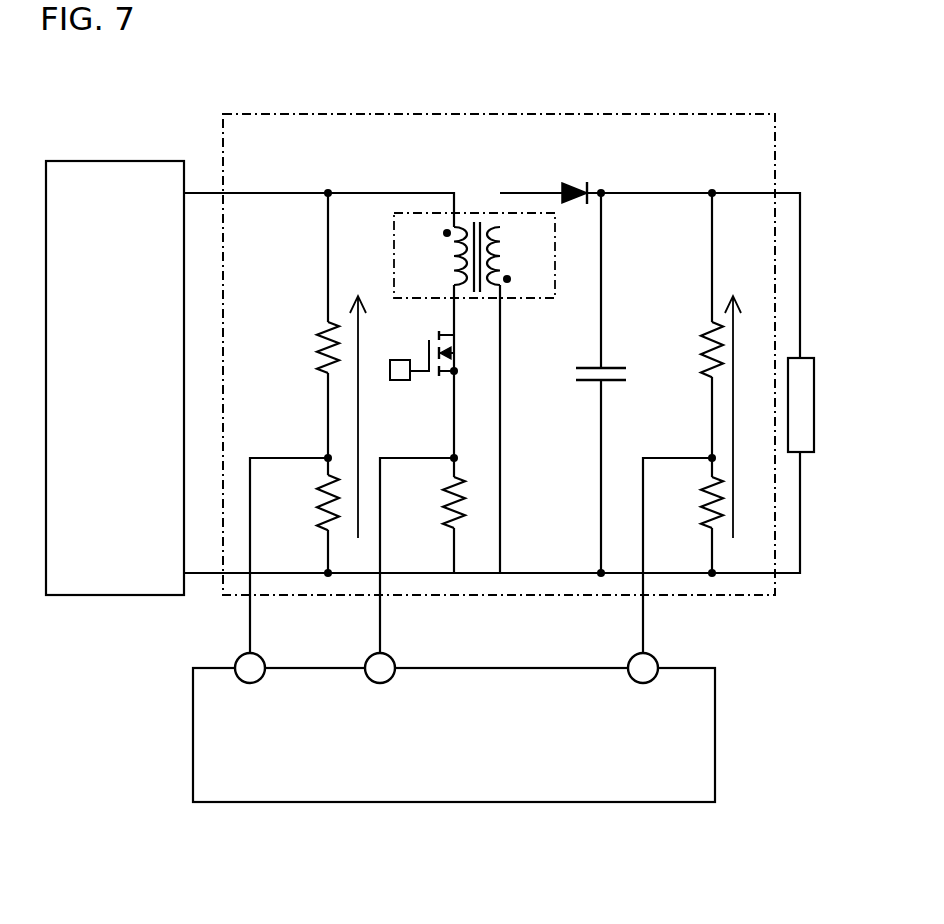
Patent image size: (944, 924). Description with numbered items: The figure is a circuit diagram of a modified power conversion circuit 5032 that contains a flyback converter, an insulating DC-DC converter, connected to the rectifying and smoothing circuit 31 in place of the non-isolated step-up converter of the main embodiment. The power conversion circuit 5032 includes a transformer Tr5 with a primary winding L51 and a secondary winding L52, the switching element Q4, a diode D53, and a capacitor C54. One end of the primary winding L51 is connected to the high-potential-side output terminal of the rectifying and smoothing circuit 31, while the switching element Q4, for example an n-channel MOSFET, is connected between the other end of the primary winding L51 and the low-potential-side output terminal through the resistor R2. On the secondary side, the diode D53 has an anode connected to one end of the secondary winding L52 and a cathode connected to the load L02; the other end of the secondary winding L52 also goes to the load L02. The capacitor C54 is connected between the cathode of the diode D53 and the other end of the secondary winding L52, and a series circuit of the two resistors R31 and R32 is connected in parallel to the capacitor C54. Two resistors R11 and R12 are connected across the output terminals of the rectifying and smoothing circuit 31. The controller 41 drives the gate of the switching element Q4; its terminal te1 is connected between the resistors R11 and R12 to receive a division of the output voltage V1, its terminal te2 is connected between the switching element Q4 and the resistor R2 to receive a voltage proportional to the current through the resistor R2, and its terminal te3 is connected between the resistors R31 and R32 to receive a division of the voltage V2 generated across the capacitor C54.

The rectifying and smoothing circuit 31 is at (146, 160).
The power conversion circuit 5032 is at (685, 112).
The transformer Tr5 is at (408, 213).
The primary winding L51 is at (436, 256).
The secondary winding L52 is at (517, 256).
The diode D53 is at (574, 178).
The capacitor C54 is at (576, 380).
The switching element Q4 is at (425, 349).
The resistor R11 is at (307, 347).
The resistor R12 is at (307, 502).
The resistor R2 is at (440, 502).
The resistor R31 is at (694, 349).
The resistor R32 is at (694, 502).
The voltage value V1 is at (366, 417).
The voltage value V2 is at (742, 417).
The load L02 is at (822, 405).
The controller 41 is at (715, 745).
The terminal te1 is at (280, 588).
The terminal te2 is at (409, 588).
The terminal te3 is at (669, 588).